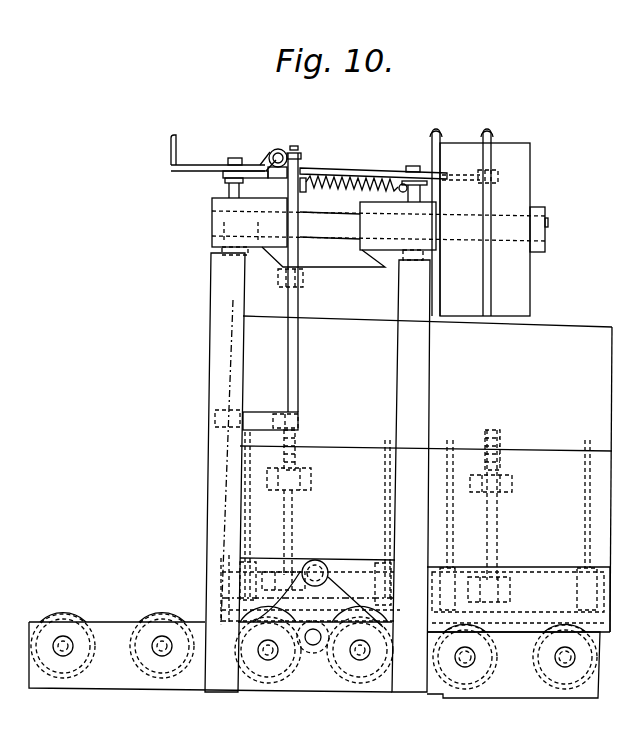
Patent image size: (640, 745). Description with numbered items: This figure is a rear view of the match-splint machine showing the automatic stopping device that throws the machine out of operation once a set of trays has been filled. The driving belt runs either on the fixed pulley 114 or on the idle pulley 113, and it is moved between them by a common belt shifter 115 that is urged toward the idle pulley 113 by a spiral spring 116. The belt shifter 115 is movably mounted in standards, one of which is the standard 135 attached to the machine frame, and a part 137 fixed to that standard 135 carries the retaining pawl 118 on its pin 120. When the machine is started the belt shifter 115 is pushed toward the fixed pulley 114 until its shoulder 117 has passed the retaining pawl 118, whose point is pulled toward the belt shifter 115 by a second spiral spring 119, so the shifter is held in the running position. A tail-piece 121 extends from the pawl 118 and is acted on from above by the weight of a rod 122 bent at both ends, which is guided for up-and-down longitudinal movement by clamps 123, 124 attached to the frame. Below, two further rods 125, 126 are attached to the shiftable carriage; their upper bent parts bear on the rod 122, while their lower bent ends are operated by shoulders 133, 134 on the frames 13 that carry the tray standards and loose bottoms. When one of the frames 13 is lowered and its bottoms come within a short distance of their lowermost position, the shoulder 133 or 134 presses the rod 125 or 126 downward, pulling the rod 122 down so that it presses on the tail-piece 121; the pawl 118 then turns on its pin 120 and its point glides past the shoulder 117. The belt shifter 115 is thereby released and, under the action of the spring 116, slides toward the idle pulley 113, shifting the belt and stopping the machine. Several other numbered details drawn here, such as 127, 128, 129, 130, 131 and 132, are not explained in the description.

The frame 13 is at (229, 583).
The idle pulley 113 is at (528, 155).
The fixed pulley 114 is at (450, 153).
The belt shifter 115 is at (215, 165).
The spiral spring 116 is at (362, 170).
The shoulder 117 is at (264, 165).
The retaining pawl 118 is at (281, 149).
The spiral spring 119 is at (276, 172).
The pin 120 is at (284, 153).
The tail-piece 121 is at (303, 156).
The rod 122 is at (299, 211).
The clamp 123 is at (306, 280).
The clamp 124 is at (263, 412).
The rod 125 is at (293, 512).
The rod 126 is at (498, 520).
The nut 127 is at (312, 484).
The roller 128 is at (299, 583).
The nut 129 is at (513, 485).
The carriage block 130 is at (511, 591).
The rod 131 is at (296, 456).
The nut 132 is at (500, 458).
The shoulder 133 is at (279, 568).
The shoulder 134 is at (502, 567).
The standard 135 is at (228, 190).
The part 137 is at (221, 175).